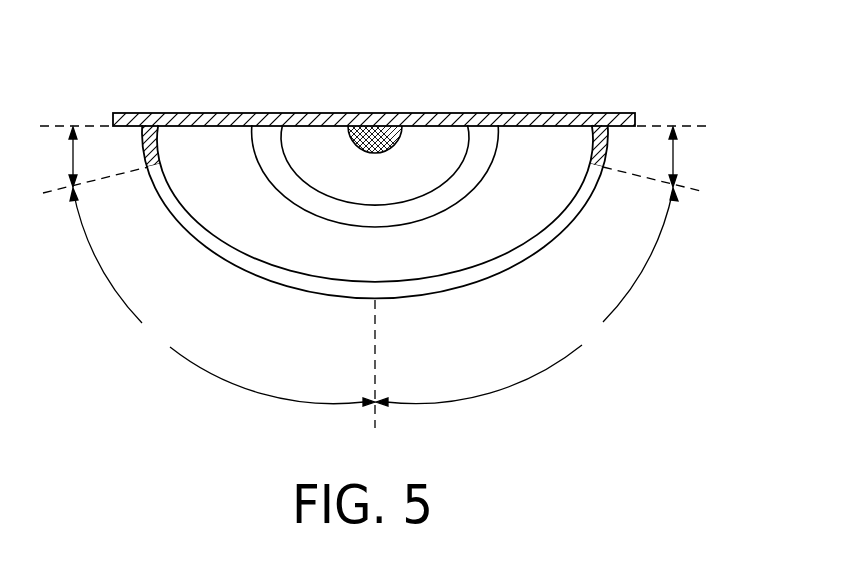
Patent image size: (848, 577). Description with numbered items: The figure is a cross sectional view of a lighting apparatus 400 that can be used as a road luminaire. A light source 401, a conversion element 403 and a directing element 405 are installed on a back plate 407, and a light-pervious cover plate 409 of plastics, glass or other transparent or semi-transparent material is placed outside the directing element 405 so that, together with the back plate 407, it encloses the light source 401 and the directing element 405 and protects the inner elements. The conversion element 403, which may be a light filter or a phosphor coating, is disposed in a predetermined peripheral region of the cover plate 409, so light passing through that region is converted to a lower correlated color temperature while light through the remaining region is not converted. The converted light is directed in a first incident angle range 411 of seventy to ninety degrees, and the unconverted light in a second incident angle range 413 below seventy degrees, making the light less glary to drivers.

The lighting apparatus 400 is at (84, 39).
The light source 401 is at (373, 135).
The conversion element 403 is at (150, 128).
The directing element 405 is at (487, 140).
The back plate 407 is at (578, 128).
The cover plate 409 is at (520, 257).
The first incident angle range 411 is at (373, 157).
The second incident angle range 413 is at (374, 297).